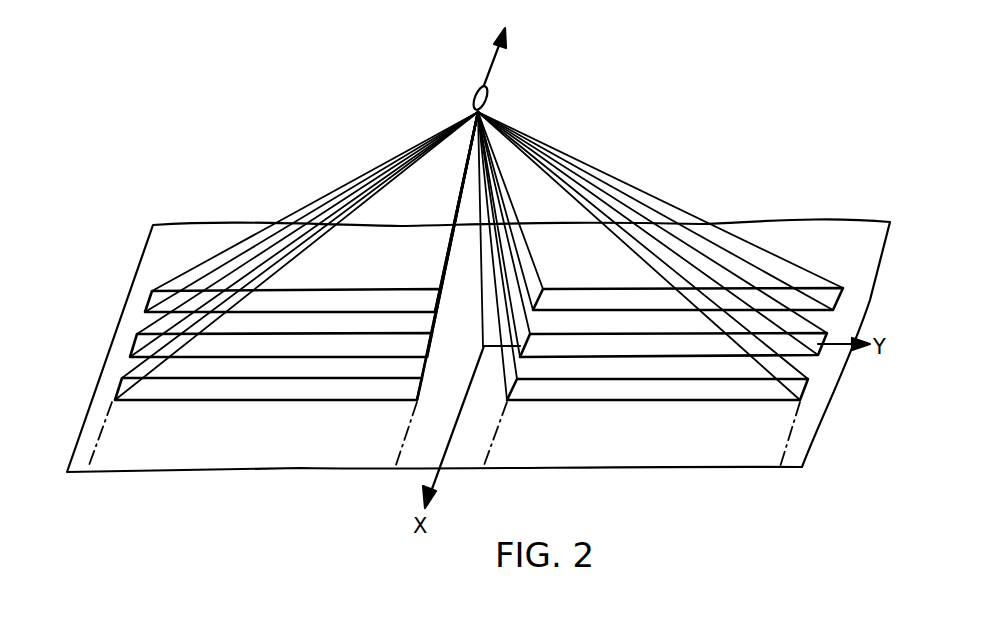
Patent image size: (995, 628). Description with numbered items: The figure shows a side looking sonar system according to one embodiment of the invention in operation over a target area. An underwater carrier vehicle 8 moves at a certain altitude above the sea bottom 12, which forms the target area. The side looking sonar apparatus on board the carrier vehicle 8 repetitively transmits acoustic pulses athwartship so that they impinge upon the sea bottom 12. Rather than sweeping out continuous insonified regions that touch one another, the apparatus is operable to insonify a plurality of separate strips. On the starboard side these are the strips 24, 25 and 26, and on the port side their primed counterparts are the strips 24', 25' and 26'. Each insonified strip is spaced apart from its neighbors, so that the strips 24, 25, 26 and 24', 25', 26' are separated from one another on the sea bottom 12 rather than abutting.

The underwater carrier vehicle 8 is at (474, 95).
The sea bottom 12 is at (800, 232).
The strip 24 is at (657, 408).
The strip 24' is at (268, 405).
The strip 25 is at (673, 385).
The strip 25' is at (281, 381).
The strip 26 is at (688, 286).
The strip 26' is at (292, 287).